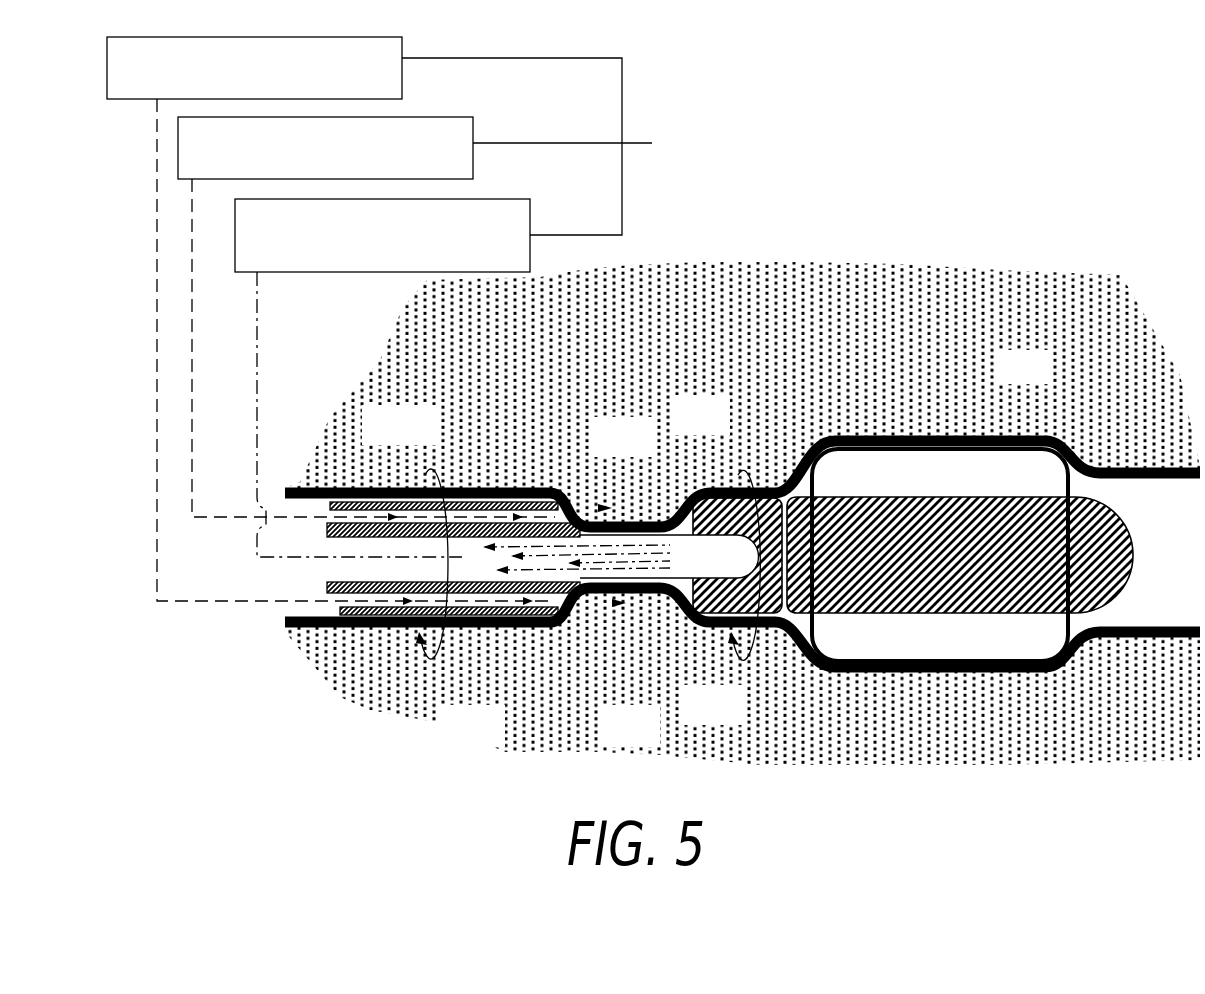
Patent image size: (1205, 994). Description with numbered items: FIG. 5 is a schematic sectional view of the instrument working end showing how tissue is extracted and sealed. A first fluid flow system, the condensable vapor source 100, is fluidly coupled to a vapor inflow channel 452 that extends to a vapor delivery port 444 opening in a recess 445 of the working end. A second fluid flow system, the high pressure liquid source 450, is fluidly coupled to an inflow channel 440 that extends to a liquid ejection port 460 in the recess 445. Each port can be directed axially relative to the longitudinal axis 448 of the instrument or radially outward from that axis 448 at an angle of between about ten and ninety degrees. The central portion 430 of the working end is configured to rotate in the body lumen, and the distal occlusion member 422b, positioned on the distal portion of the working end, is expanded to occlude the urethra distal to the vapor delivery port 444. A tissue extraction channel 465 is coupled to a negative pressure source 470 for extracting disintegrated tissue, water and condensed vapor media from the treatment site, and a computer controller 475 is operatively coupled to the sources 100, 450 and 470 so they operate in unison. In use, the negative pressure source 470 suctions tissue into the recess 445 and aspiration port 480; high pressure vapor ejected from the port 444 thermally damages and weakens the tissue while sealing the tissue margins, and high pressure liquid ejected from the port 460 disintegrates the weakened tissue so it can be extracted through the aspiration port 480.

The condensable vapor source 100 is at (254, 68).
The high pressure liquid source 450 is at (325, 148).
The negative pressure source 470 is at (382, 235).
The computer controller 475 is at (695, 156).
The longitudinal axis 448 is at (353, 414).
The vapor inflow channel 440 is at (352, 517).
The central portion 430 is at (522, 622).
The vapor inflow channel 452 is at (383, 615).
The liquid ejection port 460 is at (574, 510).
The recess 445 is at (640, 516).
The vapor delivery port 444 is at (572, 608).
The aspiration port 480 is at (645, 577).
The tissue extraction channel 465 is at (480, 556).
The distal occlusion member 422b is at (965, 435).